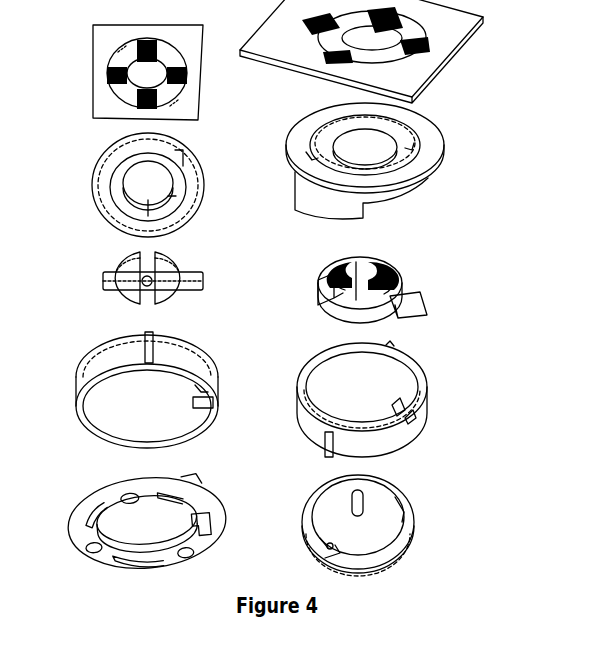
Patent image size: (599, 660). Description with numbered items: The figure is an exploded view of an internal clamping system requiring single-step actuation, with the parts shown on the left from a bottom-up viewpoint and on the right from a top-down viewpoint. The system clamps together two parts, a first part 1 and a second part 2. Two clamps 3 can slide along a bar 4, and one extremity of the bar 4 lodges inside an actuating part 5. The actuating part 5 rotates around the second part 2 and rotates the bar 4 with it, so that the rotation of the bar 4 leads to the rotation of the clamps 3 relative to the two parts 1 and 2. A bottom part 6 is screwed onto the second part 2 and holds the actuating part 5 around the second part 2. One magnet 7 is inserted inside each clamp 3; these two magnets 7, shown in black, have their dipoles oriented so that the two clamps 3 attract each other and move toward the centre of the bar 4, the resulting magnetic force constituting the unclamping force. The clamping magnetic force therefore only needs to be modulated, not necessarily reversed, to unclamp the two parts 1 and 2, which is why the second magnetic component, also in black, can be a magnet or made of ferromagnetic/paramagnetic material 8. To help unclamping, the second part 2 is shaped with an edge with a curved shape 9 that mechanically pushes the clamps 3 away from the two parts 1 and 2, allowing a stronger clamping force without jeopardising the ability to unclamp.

The first part 1 is at (275, 70).
The second part 2 is at (235, 170).
The clamps 3 is at (118, 254).
The bar 4 is at (400, 317).
The actuating part 5 is at (224, 393).
The bottom part 6 is at (227, 513).
The magnet 7 is at (357, 249).
The ferromagnetic/paramagnetic material 8 is at (130, 37).
The edge with a curved shape 9 is at (135, 211).